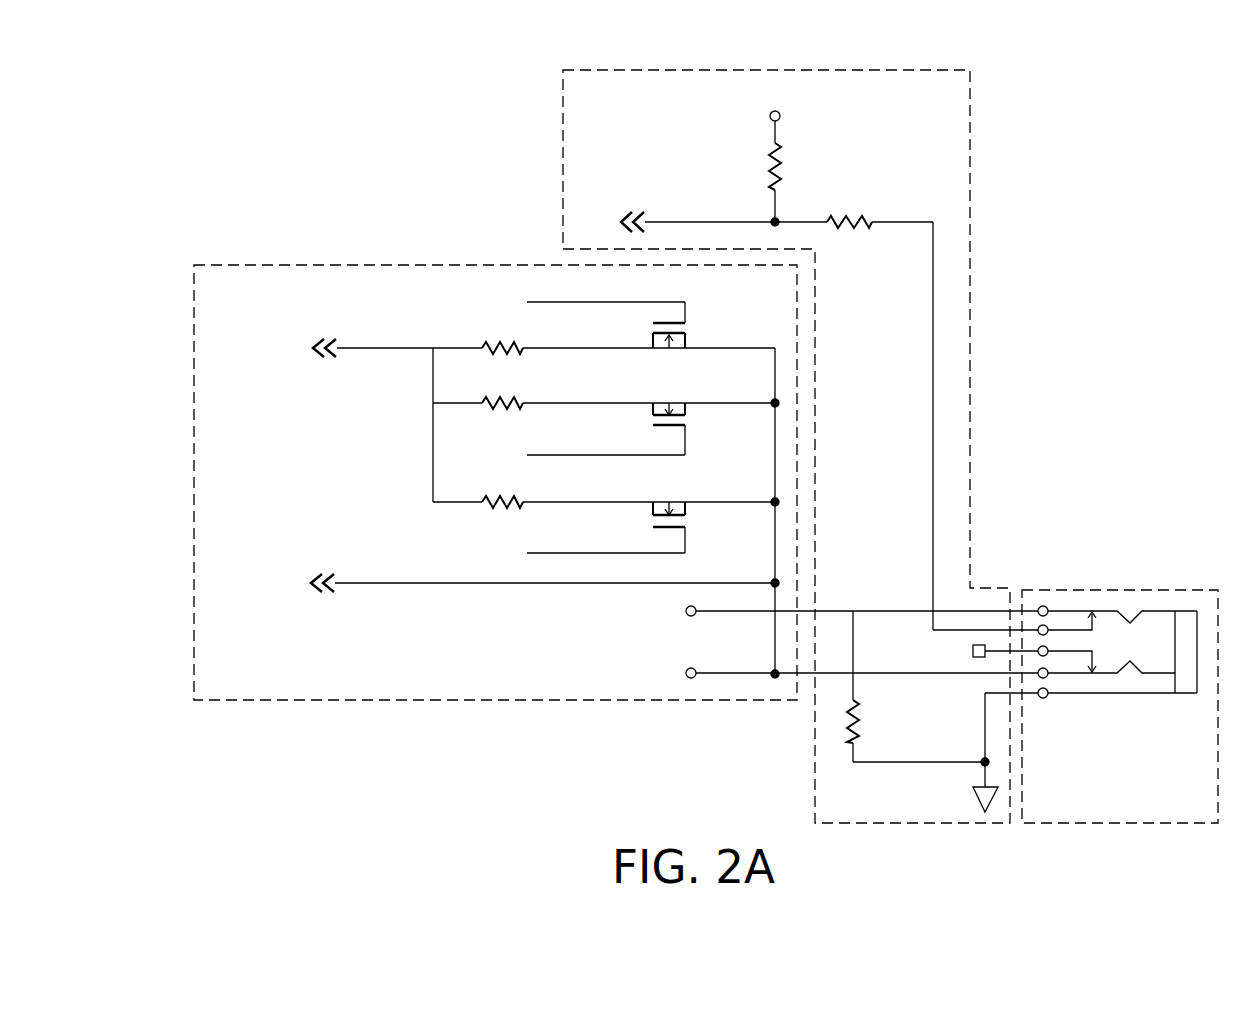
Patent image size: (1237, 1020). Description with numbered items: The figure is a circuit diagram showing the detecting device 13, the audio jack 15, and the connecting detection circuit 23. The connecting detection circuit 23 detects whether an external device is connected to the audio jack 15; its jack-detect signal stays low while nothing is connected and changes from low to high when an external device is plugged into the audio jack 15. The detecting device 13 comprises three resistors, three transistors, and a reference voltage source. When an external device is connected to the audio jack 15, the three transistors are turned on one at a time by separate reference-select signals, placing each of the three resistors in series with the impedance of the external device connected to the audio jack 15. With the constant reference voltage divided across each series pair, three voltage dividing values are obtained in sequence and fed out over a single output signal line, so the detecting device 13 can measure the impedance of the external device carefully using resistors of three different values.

The detecting device 13 is at (229, 266).
The connecting detection circuit 23 is at (930, 70).
The audio jack 15 is at (1170, 590).